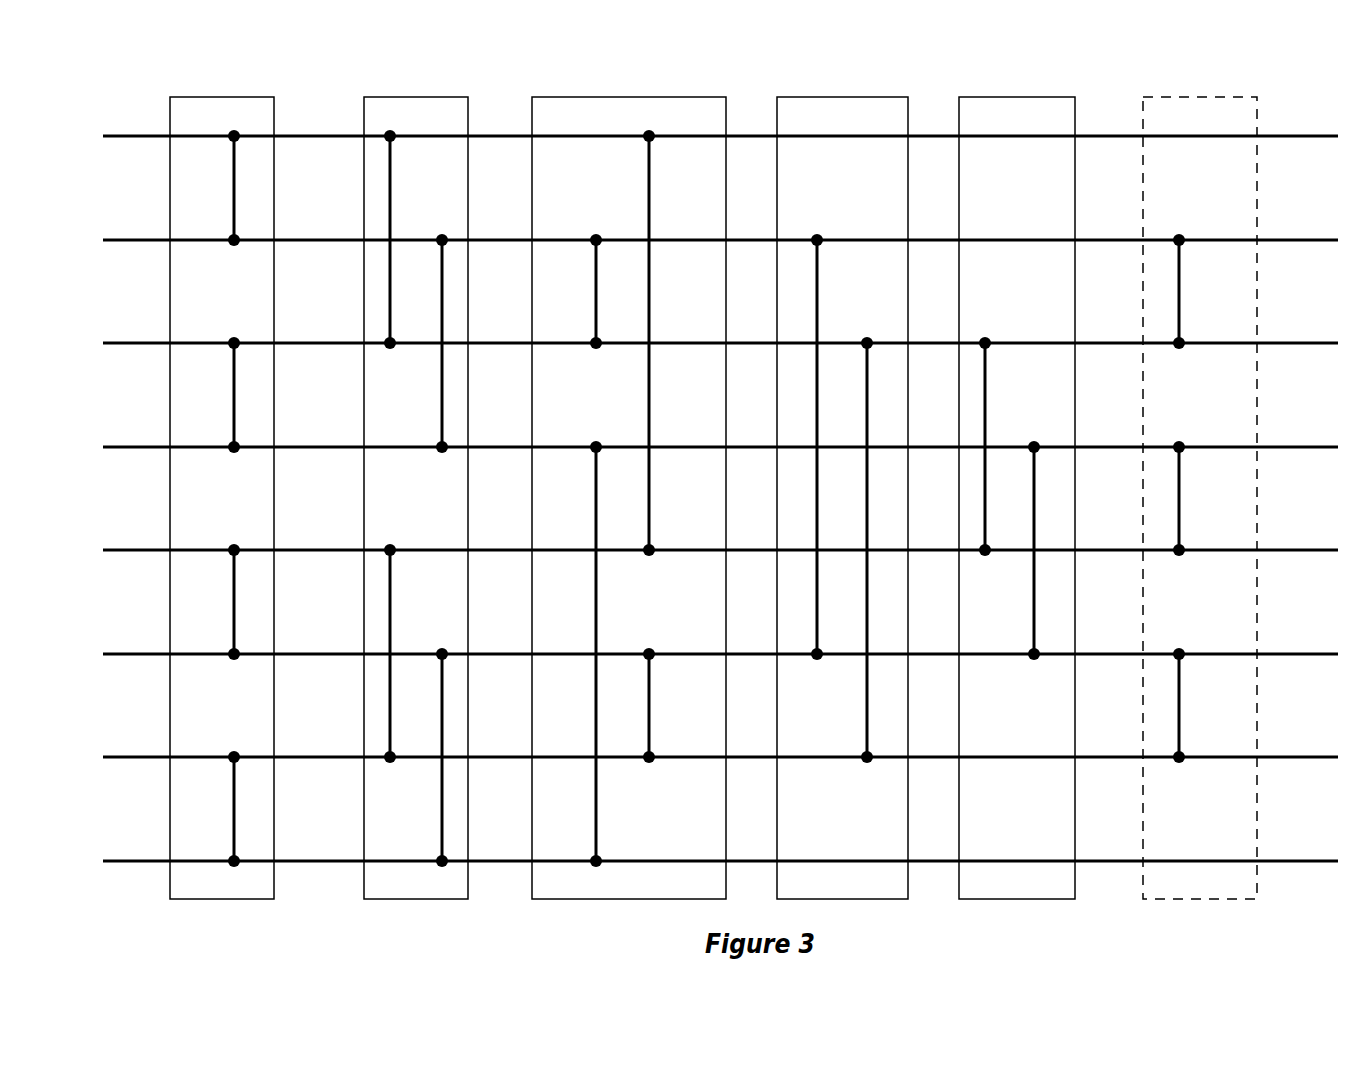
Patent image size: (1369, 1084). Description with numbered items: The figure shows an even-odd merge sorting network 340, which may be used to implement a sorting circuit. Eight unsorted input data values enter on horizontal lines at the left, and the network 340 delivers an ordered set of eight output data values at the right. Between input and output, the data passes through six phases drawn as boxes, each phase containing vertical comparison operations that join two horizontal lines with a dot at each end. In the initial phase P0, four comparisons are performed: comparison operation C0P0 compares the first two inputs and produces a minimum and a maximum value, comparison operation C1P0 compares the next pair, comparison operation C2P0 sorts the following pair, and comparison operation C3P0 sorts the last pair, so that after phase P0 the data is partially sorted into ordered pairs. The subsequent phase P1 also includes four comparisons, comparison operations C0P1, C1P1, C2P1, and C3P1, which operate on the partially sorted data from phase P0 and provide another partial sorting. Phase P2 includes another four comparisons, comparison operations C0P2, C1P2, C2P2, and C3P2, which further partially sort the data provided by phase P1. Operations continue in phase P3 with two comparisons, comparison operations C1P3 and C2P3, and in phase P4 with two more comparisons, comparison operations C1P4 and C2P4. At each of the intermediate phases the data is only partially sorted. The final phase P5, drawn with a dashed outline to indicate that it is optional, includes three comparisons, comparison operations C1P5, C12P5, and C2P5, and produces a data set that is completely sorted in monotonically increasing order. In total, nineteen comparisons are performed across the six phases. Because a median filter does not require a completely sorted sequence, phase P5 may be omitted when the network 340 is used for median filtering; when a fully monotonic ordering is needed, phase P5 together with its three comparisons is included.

The even-odd merge sorting network 340 is at (72, 61).
The initial phase P0 is at (222, 478).
The subsequent phase P1 is at (416, 478).
The phase P2 is at (629, 478).
The phase P3 is at (842, 478).
The phase P4 is at (1017, 478).
The final phase P5 is at (1200, 478).
The comparison operation C0P0 is at (212, 188).
The comparison operation C1P0 is at (212, 395).
The comparison operation C2P0 is at (212, 602).
The comparison operation C3P0 is at (212, 809).
The comparison operation C0P1 is at (410, 239).
The comparison operation C1P1 is at (422, 343).
The comparison operation C2P1 is at (410, 653).
The comparison operation C3P1 is at (422, 757).
The comparison operation C0P2 is at (670, 343).
The comparison operation C1P2 is at (576, 291).
The comparison operation C2P2 is at (670, 705).
The comparison operation C3P2 is at (618, 654).
The comparison operation C1P3 is at (840, 447).
The comparison operation C2P3 is at (845, 550).
The comparison operation C1P4 is at (1012, 446).
The comparison operation C2P4 is at (1013, 550).
The comparison operation C1P5 is at (1200, 291).
The comparison operation C12P5 is at (1206, 498).
The comparison operation C2P5 is at (1204, 705).